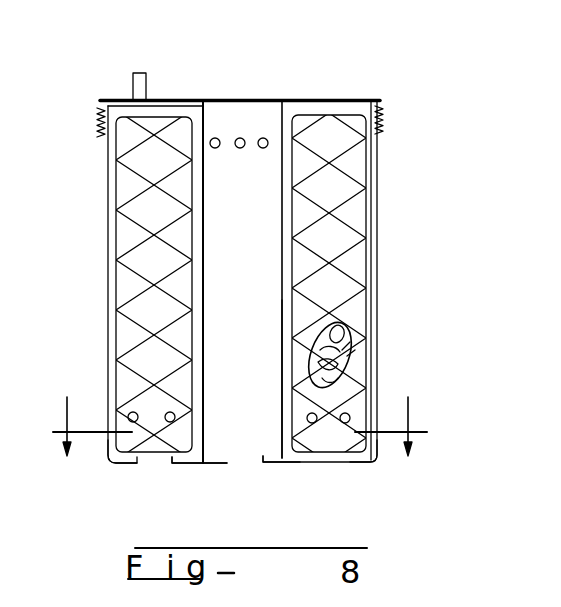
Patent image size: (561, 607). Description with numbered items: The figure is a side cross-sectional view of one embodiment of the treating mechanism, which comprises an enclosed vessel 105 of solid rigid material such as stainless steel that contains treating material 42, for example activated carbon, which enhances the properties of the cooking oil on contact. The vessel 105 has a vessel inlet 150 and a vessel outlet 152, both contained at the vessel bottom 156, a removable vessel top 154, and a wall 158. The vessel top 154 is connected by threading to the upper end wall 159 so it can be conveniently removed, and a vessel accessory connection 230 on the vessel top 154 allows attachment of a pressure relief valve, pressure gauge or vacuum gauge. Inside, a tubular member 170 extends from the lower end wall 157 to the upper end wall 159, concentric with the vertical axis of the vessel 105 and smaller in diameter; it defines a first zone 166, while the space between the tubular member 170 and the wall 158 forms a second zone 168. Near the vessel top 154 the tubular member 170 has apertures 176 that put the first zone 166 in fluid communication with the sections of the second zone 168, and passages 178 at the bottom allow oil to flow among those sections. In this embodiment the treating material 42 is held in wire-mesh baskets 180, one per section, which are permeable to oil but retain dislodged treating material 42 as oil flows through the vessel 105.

The enclosed vessel 105 is at (392, 77).
The vessel inlet 150 is at (248, 463).
The vessel outlet 152 is at (152, 462).
The vessel top 154 is at (120, 99).
The vessel bottom 156 is at (208, 464).
The lower end wall 157 is at (388, 460).
The wall 158 is at (380, 241).
The upper end wall 159 is at (380, 107).
The first zone 166 is at (207, 106).
The second zone 168 is at (172, 212).
The tubular member 170 is at (216, 138).
The apertures 176 is at (240, 138).
The passages 178 is at (164, 411).
The baskets 180 is at (116, 275).
The vessel accessory connection 230 is at (129, 99).
The treating material 42 is at (342, 343).